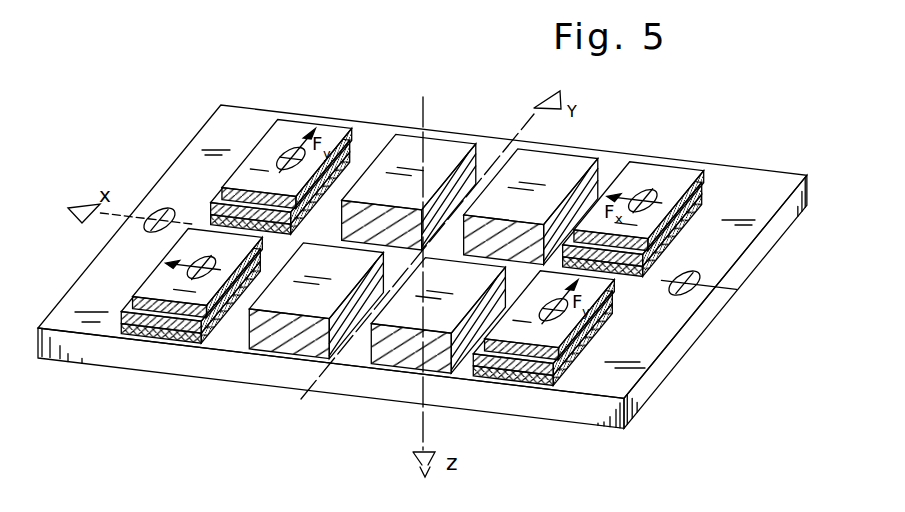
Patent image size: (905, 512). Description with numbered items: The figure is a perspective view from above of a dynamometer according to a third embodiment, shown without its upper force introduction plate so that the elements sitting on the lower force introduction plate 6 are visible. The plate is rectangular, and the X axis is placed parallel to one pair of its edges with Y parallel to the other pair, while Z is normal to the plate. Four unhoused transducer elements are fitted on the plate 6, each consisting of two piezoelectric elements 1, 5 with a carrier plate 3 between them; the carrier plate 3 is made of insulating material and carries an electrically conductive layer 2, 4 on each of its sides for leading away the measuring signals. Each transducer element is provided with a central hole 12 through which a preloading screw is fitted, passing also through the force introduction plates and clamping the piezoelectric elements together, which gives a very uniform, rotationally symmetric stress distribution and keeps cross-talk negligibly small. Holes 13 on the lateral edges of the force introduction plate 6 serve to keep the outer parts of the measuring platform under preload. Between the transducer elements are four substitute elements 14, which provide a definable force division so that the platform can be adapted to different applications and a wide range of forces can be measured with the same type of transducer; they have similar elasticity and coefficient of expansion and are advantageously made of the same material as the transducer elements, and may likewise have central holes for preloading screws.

The piezoelectric element 1 is at (158, 341).
The electrically conductive layer 2 is at (167, 346).
The carrier plate 3 is at (147, 333).
The electrically conductive layer 4 is at (190, 356).
The piezoelectric element 5 is at (220, 333).
The force introduction plate 6 is at (748, 180).
The central hole 12 is at (292, 150).
The hole 13 is at (692, 292).
The substitute element 14 is at (440, 143).